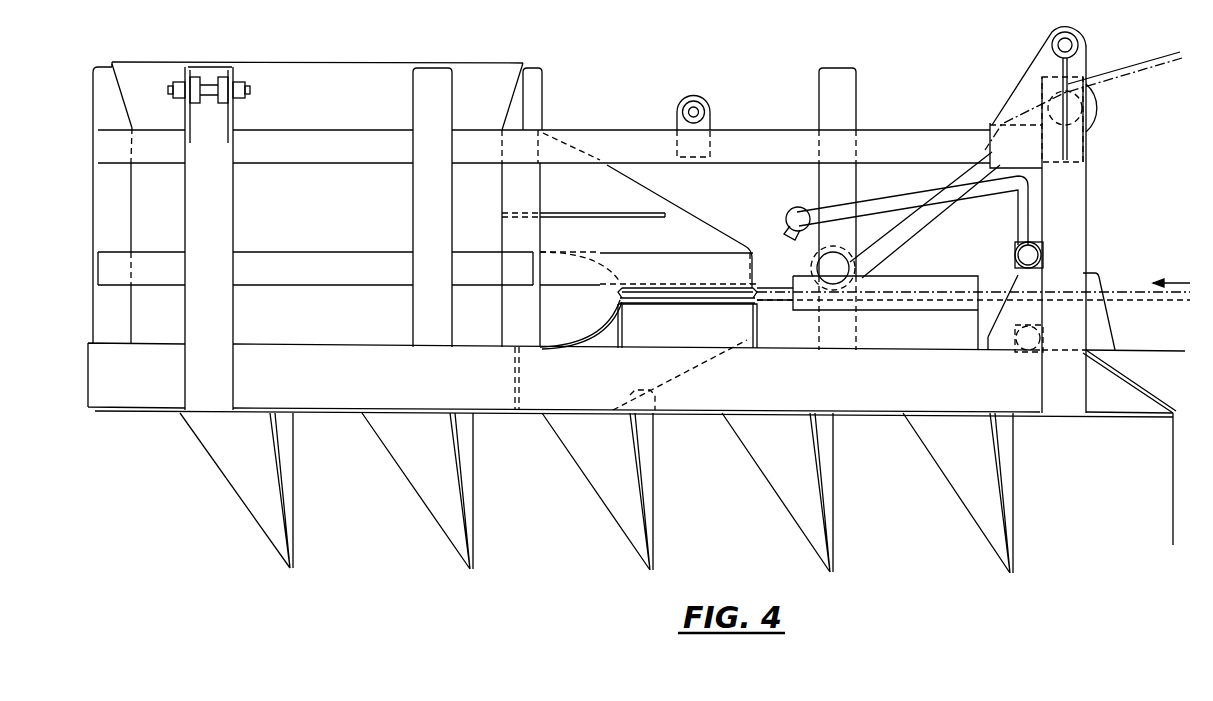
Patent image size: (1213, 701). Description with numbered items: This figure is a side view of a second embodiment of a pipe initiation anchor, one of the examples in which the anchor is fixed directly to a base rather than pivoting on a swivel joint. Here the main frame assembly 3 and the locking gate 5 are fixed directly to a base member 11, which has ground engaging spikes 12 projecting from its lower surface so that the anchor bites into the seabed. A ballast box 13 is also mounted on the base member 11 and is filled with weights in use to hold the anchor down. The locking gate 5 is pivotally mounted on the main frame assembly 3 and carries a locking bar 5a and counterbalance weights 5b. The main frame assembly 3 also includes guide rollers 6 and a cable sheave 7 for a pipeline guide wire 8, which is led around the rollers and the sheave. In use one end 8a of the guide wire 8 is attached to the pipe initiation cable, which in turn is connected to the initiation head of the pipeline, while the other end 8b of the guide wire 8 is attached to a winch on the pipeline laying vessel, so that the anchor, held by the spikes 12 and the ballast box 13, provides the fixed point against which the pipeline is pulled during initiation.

The main frame assembly 3 is at (596, 128).
The locking gate 5 is at (1026, 192).
The locking bar 5a is at (1020, 254).
The counterbalance weights 5b is at (794, 210).
The guide rollers 6 is at (809, 259).
The cable sheave 7 is at (645, 290).
The pipeline guide wire 8 is at (1112, 72).
The one end of the guide wire 8a is at (1184, 298).
The other end of the guide wire 8b is at (1172, 57).
The base member 11 is at (352, 412).
The ground engaging spikes 12 is at (275, 530).
The ballast box 13 is at (334, 67).